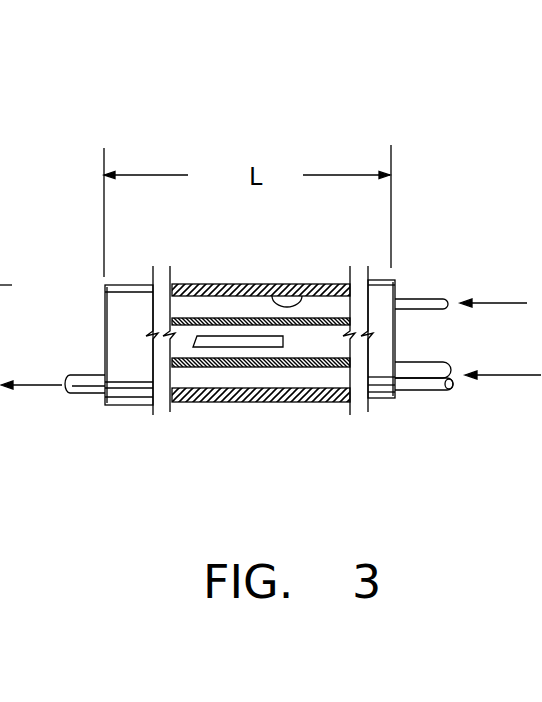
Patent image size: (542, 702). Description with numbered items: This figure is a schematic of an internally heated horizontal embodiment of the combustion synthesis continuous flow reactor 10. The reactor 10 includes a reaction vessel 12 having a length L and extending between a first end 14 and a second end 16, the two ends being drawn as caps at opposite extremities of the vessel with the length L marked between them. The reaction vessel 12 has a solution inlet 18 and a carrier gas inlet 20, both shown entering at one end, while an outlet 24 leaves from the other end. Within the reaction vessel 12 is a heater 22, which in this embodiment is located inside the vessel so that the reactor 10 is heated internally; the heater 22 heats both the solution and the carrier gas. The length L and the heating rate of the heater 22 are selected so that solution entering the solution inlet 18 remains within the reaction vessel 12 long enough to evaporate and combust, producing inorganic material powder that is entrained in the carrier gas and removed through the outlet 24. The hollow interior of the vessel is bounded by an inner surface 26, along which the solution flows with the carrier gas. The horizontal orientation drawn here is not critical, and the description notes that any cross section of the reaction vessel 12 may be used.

The reactor 10 is at (268, 132).
The reaction vessel 12 is at (390, 423).
The first end 14 is at (408, 268).
The second end 16 is at (102, 275).
The solution inlet 18 is at (425, 297).
The carrier gas inlet 20 is at (425, 363).
The heater 22 is at (193, 347).
The outlet 24 is at (92, 397).
The inner surface 26 is at (268, 283).